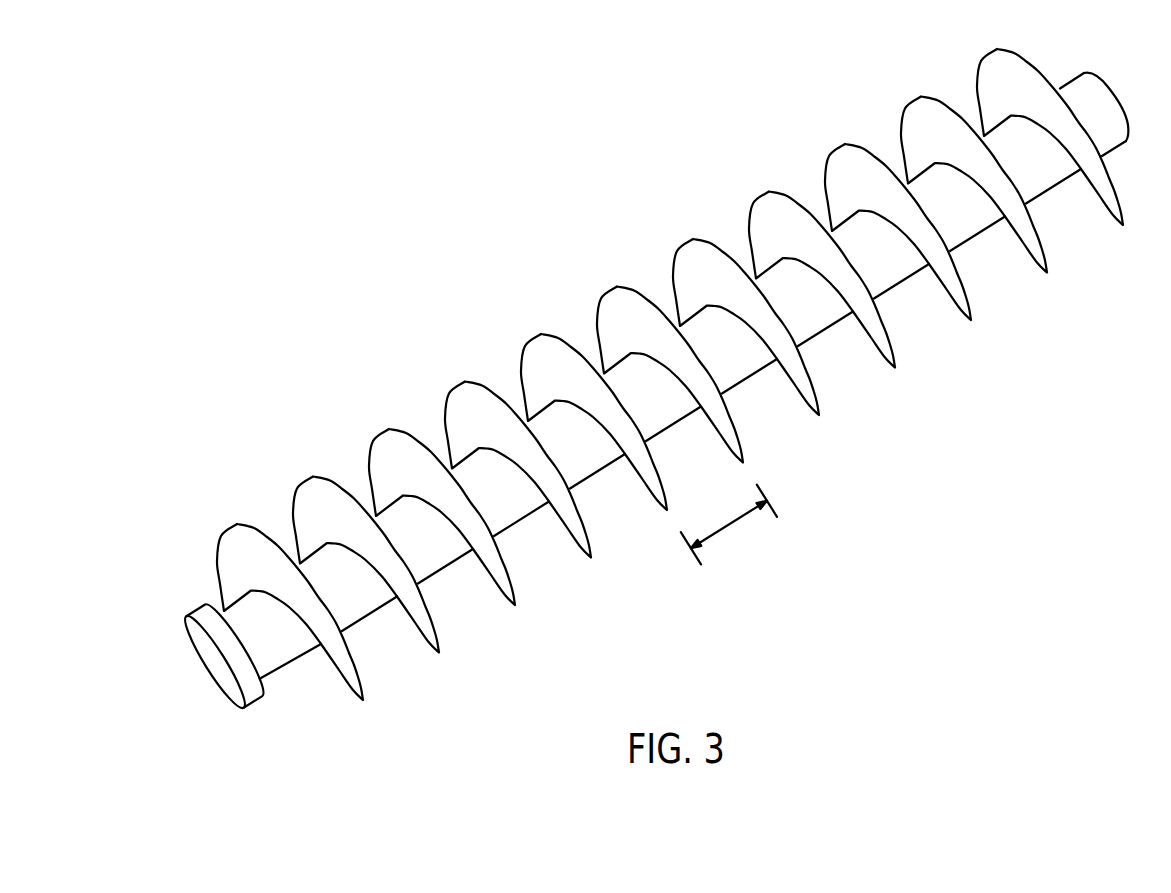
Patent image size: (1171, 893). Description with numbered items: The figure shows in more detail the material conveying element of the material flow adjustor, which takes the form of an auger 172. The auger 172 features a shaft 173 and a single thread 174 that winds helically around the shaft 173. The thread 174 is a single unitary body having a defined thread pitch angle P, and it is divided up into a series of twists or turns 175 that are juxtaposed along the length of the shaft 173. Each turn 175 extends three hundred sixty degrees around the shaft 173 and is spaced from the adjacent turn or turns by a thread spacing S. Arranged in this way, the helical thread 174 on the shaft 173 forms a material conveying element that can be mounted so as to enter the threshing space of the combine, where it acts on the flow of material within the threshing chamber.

The auger 172 is at (486, 110).
The shaft 173 is at (1053, 182).
The thread 174 is at (913, 98).
The turn 175 is at (313, 477).
The thread pitch angle P is at (823, 182).
The thread spacing S is at (729, 524).